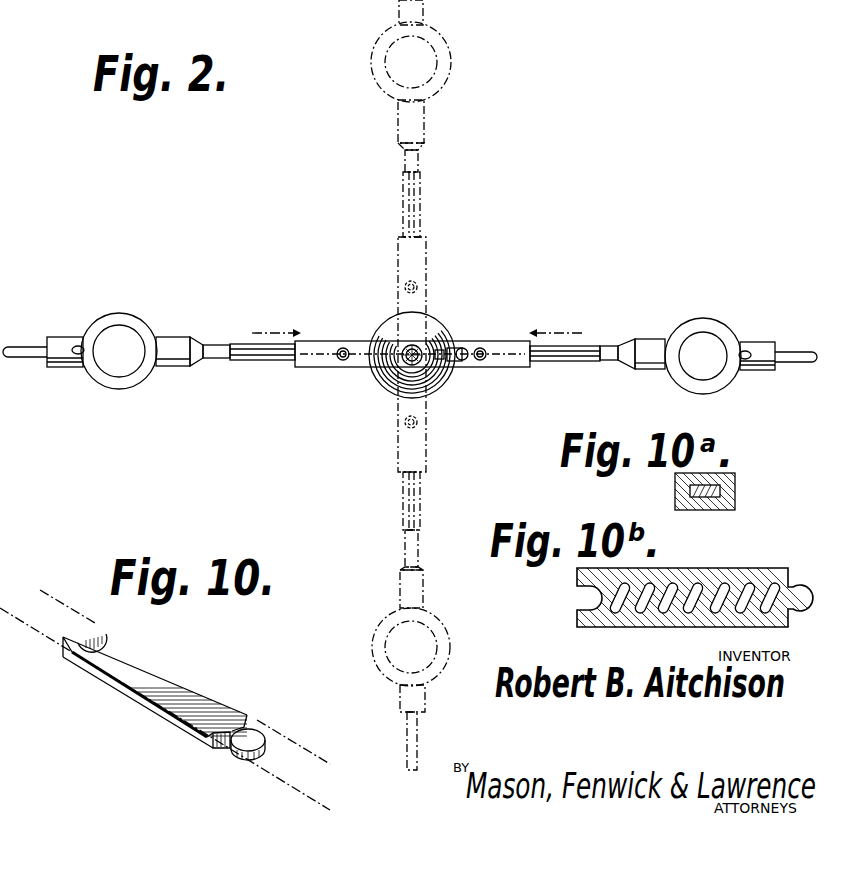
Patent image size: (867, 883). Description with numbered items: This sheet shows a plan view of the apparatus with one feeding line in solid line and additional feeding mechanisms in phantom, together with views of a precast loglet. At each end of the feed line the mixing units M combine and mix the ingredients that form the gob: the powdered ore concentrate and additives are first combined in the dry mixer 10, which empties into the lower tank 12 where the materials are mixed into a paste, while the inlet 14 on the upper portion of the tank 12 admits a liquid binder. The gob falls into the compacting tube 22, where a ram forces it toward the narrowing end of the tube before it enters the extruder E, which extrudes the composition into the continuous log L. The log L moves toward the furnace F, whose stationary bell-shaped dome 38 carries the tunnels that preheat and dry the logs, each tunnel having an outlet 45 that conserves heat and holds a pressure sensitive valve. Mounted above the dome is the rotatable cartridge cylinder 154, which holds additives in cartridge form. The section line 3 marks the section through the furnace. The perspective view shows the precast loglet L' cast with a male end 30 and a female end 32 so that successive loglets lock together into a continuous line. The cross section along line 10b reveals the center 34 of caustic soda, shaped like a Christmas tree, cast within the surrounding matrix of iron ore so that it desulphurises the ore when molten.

In FIG. 2, the dry mixer 10 is at (114, 338).
In FIG. 2, the lower tank 12 is at (133, 386).
In FIG. 2, the inlet 14 is at (77, 356).
In FIG. 2, the compacting tube 22 is at (173, 340).
In FIG. 2, the section line 3- 3 is at (240, 372).
In FIG. 2, the dome 38 is at (378, 338).
In FIG. 2, the outlet 45 is at (343, 361).
In FIG. 2, the cartridge cylinder 154 is at (445, 360).
In FIG. 2, the furnace F is at (454, 324).
In FIG. 2, the mixing units M is at (144, 318).
In FIG. 2, the log L is at (565, 368).
In FIG. 2, the extruder E is at (645, 374).
In FIG. 10, the female end 32 is at (97, 633).
In FIG. 10, the male end 30 is at (258, 730).
In FIG. 10, the precast log or loglet L' is at (155, 692).
In FIG. 10B, the precast log or loglet L' is at (666, 580).
In FIG. 10A, the center 34 is at (716, 486).
In FIG. 10B, the center 34 is at (716, 586).
In FIG. 10A, the section line 10b- 10b is at (765, 491).